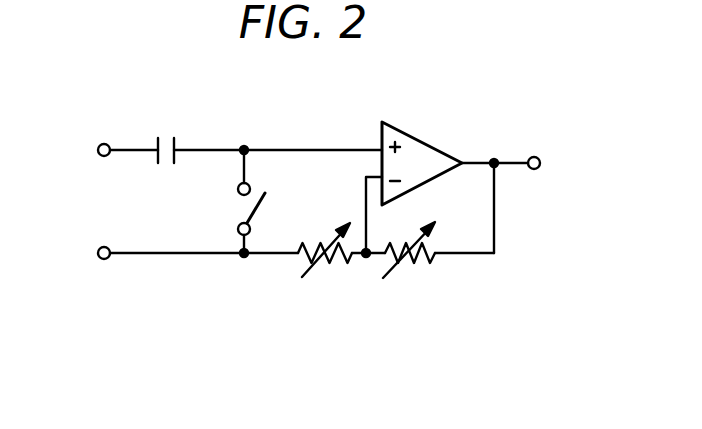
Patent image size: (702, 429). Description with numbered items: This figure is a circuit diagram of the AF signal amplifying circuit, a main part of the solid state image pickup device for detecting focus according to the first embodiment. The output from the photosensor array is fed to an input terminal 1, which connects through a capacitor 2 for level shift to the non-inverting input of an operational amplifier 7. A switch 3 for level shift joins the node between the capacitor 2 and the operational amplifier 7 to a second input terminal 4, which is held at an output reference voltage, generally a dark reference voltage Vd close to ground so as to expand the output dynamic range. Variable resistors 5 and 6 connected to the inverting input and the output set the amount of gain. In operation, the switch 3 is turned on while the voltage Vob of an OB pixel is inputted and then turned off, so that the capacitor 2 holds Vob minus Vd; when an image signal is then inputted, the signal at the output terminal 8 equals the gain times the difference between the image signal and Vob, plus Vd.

The input terminal 1 is at (97, 150).
The capacitor 2 is at (166, 134).
The switch 3 is at (234, 210).
The input terminal 4 is at (97, 252).
The variable resistor 5 is at (327, 275).
The variable resistor 6 is at (408, 275).
The operational amplifier 7 is at (412, 134).
The output terminal 8 is at (533, 153).